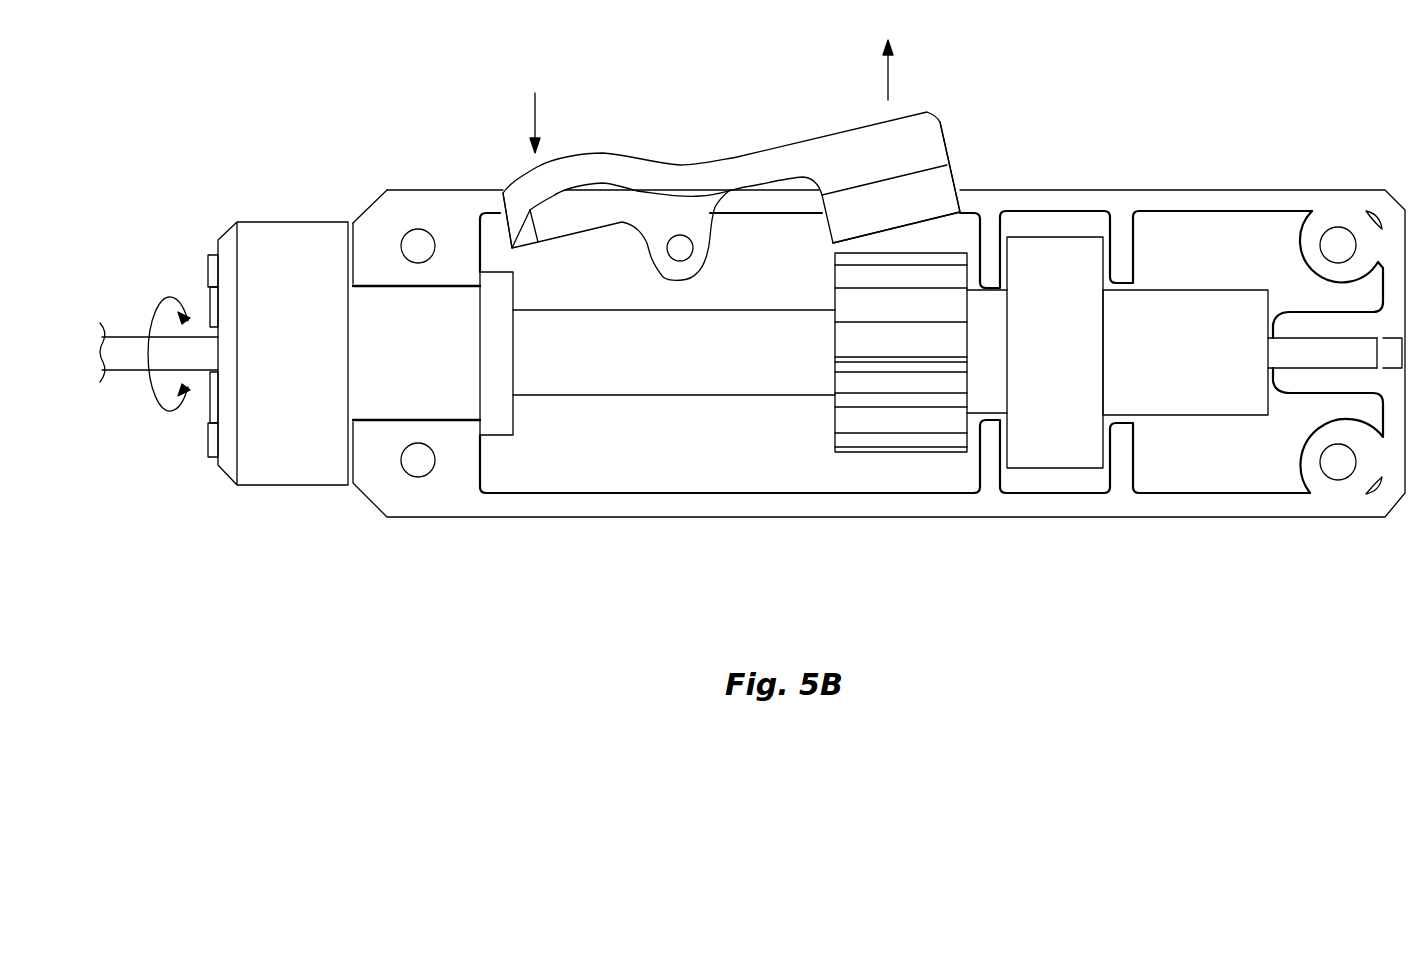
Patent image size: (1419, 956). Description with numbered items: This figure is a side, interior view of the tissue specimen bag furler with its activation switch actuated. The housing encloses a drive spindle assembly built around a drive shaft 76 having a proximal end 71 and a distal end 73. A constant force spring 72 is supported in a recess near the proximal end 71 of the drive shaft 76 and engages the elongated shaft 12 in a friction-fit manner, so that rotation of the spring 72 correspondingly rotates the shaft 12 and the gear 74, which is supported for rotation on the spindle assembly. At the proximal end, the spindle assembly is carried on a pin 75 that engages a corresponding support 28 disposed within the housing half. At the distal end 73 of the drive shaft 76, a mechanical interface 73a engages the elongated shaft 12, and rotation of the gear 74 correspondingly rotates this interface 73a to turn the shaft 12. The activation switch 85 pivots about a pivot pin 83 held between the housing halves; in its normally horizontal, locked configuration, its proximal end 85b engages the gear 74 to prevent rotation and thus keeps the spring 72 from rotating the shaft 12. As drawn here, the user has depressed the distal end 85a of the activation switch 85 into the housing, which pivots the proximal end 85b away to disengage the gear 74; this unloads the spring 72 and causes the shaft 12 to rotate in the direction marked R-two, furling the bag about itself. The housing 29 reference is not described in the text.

The elongated shaft 12 is at (125, 333).
The support 28 is at (1386, 357).
The housing 29 is at (410, 500).
The proximal end of drive shaft 71 is at (1192, 297).
The constant force spring 72 is at (1058, 460).
The distal end of drive shaft 73 is at (285, 485).
The mechanical interface 73a is at (208, 372).
The gear 74 is at (902, 443).
The pin 75 is at (1293, 353).
The drive shaft 76 is at (603, 380).
The pivot pin 83 is at (680, 255).
The activation switch 85 is at (847, 127).
The distal end of activation switch 85a is at (510, 187).
The proximal end of activation switch 85b is at (947, 185).